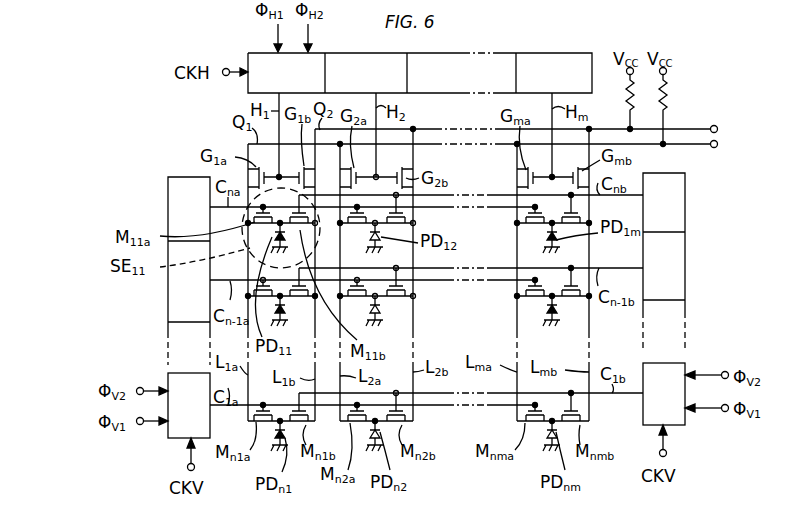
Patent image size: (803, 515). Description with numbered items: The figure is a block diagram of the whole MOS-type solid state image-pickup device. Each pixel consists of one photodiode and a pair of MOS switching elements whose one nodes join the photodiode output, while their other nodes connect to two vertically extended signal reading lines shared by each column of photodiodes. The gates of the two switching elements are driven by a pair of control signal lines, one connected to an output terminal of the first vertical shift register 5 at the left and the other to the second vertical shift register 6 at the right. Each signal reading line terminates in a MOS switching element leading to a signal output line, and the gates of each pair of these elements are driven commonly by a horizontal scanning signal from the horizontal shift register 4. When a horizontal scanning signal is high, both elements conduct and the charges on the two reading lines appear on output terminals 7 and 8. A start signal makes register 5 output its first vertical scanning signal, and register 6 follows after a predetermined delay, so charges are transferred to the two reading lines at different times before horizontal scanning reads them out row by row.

The horizontal shift register 4 is at (256, 53).
The first vertical shift register 5 is at (168, 195).
The second vertical shift register 6 is at (685, 208).
The output terminal 7 is at (718, 145).
The output terminal 8 is at (718, 128).